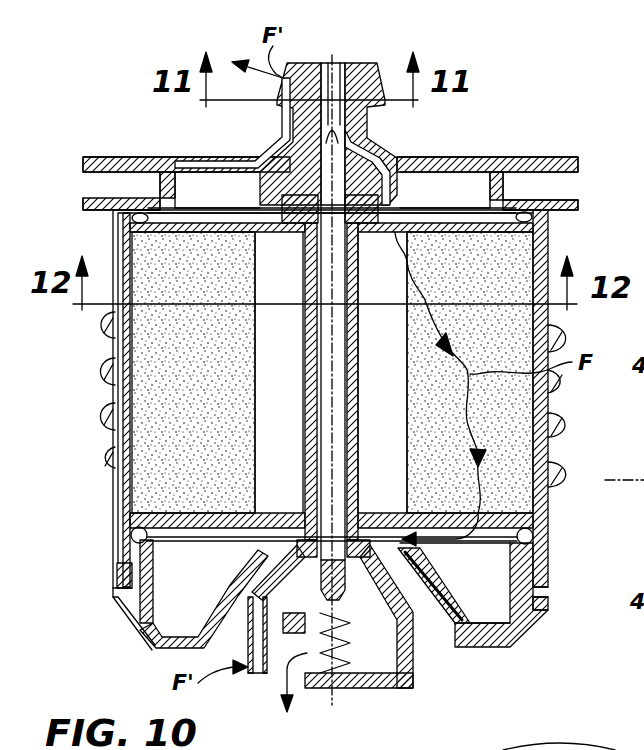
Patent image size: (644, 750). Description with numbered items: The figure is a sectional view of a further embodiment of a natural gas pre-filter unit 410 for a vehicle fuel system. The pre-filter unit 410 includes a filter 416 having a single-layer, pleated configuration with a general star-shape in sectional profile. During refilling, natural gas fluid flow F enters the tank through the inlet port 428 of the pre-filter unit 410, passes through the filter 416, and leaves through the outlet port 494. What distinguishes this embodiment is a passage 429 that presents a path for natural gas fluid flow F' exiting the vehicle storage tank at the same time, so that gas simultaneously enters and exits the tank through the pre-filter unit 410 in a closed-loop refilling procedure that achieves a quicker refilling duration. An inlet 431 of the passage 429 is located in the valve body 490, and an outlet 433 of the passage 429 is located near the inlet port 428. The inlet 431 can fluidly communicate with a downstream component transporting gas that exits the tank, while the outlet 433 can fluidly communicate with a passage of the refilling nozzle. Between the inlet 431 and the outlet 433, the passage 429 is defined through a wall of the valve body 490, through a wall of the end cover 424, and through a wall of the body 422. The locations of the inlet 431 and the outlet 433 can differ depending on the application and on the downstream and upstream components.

The pre-filter unit 410 is at (522, 141).
The filter 416 is at (494, 288).
The body 422 is at (115, 490).
The end cover 424 is at (122, 606).
The inlet port 428 is at (338, 83).
The passage 429 is at (127, 277).
The inlet 431 is at (243, 677).
The outlet 433 is at (283, 78).
The valve body 490 is at (413, 653).
The outlet port 494 is at (315, 533).